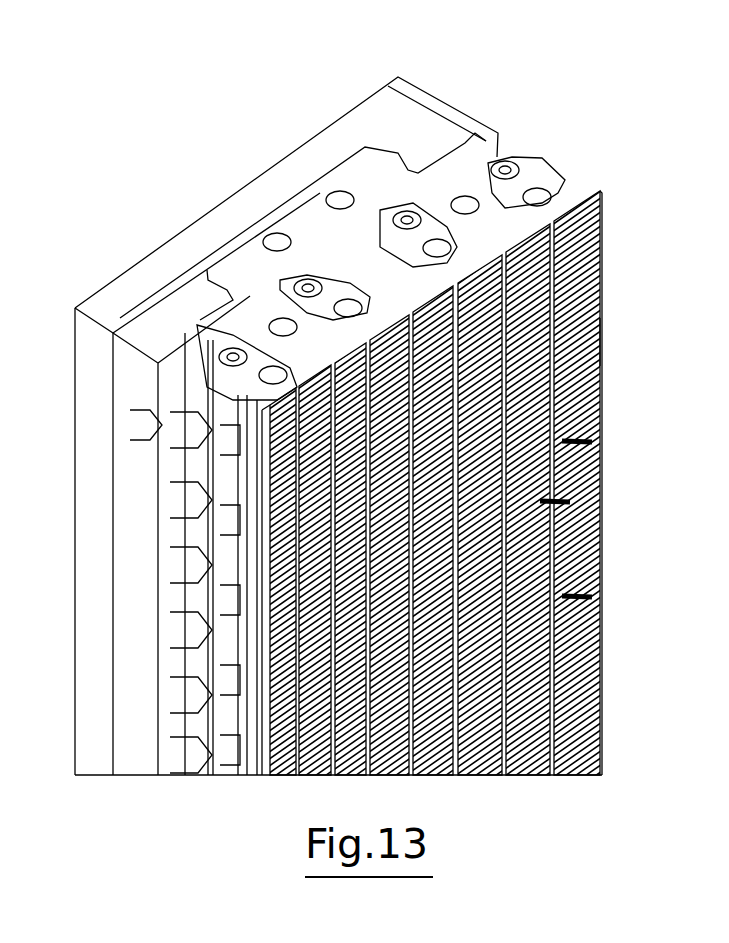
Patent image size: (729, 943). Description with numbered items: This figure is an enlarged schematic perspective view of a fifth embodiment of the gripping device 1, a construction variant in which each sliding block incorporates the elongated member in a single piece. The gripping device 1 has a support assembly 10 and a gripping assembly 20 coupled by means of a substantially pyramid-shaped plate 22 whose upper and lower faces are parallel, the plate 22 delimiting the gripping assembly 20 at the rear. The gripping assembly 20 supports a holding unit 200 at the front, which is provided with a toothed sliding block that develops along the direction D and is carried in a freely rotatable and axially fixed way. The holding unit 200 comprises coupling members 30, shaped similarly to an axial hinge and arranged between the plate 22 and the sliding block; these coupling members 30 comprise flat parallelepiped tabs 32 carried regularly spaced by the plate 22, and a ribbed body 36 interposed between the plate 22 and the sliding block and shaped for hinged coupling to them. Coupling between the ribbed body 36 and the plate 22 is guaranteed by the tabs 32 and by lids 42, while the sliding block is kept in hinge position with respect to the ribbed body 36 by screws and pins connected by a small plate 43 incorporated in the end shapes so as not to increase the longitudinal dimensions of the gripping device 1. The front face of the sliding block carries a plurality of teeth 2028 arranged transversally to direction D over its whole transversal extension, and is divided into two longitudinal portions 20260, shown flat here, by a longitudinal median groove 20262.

The gripping device 1 is at (163, 62).
The support assembly 10 is at (290, 100).
The gripping assembly 20 is at (544, 132).
The holding unit 200 is at (610, 169).
The coupling members 30 is at (508, 102).
The plate 22 is at (183, 297).
The lids 42 is at (237, 267).
The small plate 43 is at (598, 215).
The tabs 32 is at (227, 682).
The ribbed body 36 is at (207, 677).
The teeth 2028 is at (605, 362).
The longitudinal portions 20260 is at (606, 487).
The longitudinal median groove 20262 is at (605, 592).